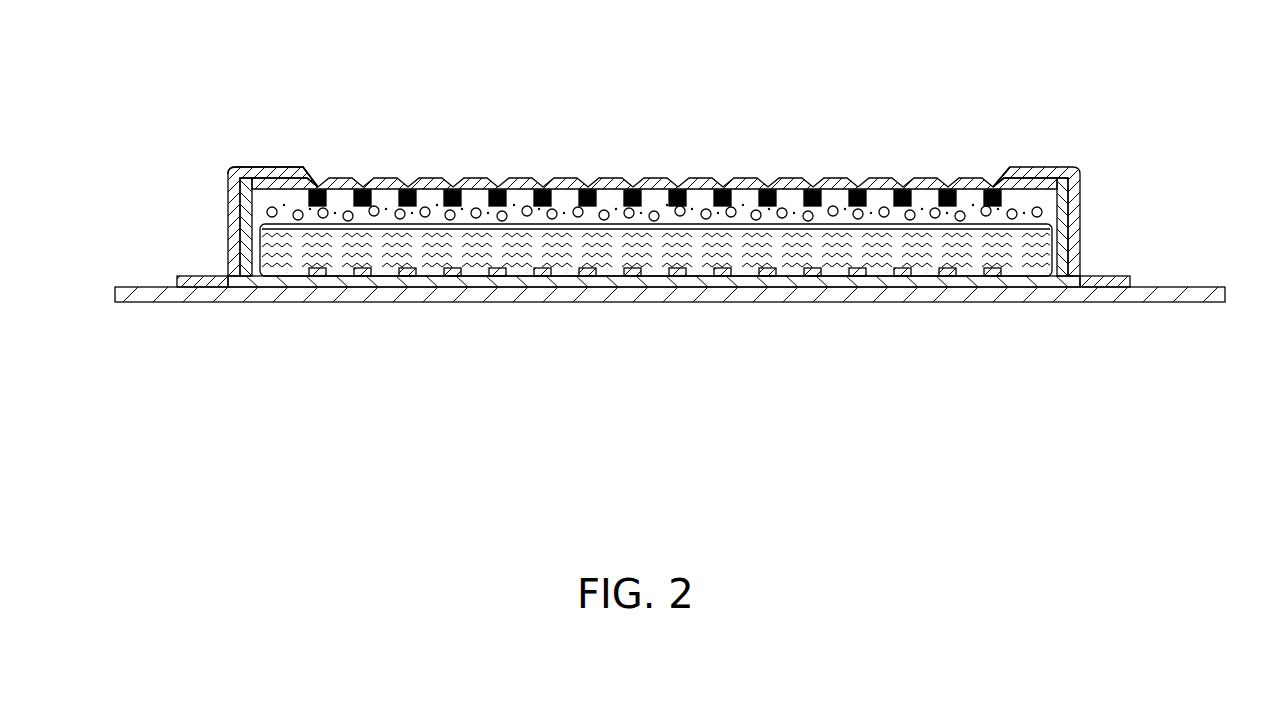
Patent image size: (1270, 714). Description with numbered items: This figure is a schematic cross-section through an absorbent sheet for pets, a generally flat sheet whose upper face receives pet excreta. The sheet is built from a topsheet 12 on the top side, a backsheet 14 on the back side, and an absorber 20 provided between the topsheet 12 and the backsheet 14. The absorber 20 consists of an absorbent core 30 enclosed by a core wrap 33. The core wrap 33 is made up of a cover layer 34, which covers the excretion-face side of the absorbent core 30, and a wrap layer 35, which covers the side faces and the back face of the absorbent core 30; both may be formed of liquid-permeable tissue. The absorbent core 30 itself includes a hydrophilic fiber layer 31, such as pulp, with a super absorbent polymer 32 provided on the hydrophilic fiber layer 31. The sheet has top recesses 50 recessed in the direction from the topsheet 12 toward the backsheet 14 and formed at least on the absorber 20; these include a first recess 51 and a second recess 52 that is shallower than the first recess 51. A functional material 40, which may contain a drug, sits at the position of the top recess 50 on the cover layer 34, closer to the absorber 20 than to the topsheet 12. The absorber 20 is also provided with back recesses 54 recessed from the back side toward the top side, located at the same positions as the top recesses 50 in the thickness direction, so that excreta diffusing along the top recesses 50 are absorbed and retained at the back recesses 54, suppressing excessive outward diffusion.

The topsheet 12 is at (747, 178).
The backsheet 14 is at (937, 293).
The absorber 20 is at (227, 212).
The absorbent core 30 is at (694, 246).
The hydrophilic fiber layer 31 is at (1080, 243).
The super absorbent polymer (SAP) 32 is at (620, 178).
The core wrap 33 is at (653, 246).
The cover layer 34 is at (337, 178).
The wrap layer 35 is at (307, 128).
The functional material 40 is at (548, 205).
The top recess 50 is at (655, 120).
The first recess 51 is at (902, 188).
The second recess 52 is at (857, 188).
The back recess 54 is at (810, 270).